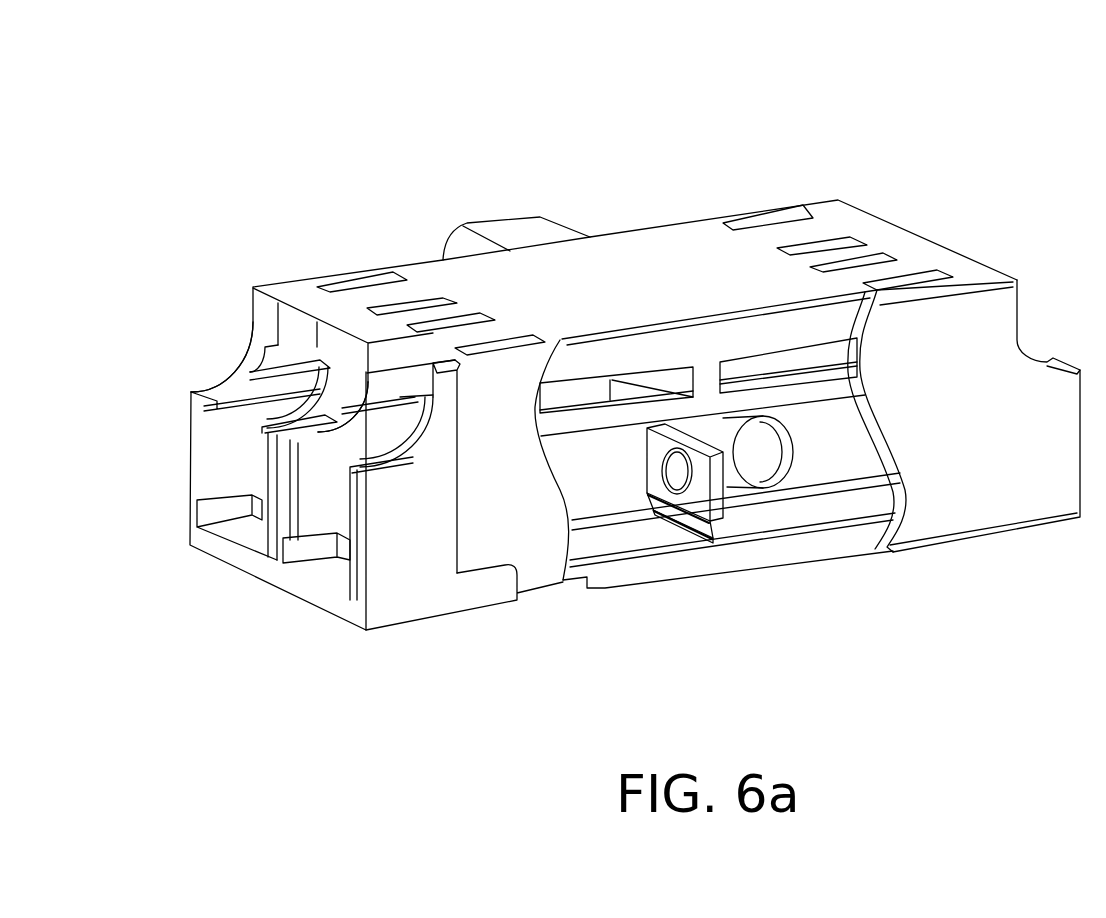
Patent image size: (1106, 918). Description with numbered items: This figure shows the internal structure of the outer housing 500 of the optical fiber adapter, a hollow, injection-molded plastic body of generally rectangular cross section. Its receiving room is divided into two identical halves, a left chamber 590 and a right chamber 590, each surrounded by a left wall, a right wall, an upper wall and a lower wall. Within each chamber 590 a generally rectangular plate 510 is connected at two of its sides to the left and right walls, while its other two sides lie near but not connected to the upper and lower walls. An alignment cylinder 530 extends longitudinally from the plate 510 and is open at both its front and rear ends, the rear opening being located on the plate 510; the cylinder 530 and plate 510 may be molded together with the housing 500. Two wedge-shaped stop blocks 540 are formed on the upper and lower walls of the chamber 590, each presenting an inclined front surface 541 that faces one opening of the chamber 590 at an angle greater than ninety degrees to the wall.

The outer housing 500 is at (579, 138).
The plate 510 is at (655, 512).
The alignment cylinder 530 is at (770, 477).
The wedge-shaped stop block 540 is at (712, 418).
The front surface 541 is at (673, 525).
The chamber 590 is at (238, 447).